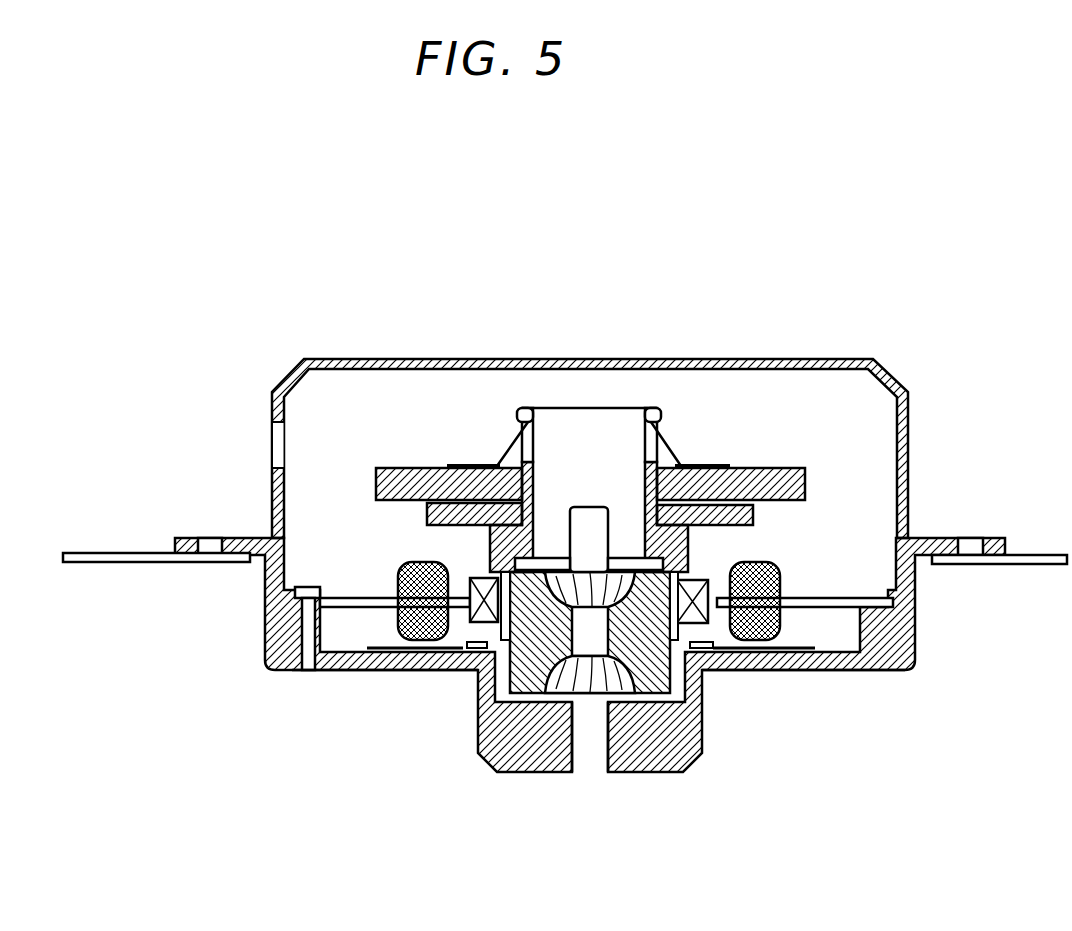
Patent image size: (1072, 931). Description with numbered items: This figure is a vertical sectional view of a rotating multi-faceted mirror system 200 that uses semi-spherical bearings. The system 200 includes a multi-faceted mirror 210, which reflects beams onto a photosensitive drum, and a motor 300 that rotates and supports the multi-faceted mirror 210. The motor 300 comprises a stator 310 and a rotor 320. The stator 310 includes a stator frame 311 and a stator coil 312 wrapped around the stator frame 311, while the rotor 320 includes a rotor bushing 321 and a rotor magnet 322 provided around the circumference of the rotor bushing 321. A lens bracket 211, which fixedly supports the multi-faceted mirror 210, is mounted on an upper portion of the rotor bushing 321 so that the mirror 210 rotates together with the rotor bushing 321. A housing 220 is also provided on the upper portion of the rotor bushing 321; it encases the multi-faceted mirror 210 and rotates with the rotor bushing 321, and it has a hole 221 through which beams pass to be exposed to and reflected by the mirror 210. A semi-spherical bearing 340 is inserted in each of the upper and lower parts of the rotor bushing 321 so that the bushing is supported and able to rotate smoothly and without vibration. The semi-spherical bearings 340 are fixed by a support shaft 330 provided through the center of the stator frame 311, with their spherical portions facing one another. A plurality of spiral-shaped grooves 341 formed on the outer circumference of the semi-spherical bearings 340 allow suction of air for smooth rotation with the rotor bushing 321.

The rotating multi-faceted mirror system 200 is at (834, 306).
The multi-faceted mirror 210 is at (805, 486).
The lens bracket 211 is at (755, 515).
The housing 220 is at (906, 384).
The hole 221 is at (275, 440).
The motor 300 is at (472, 564).
The stator 310 is at (162, 626).
The stator frame 311 is at (266, 604).
The stator coil 312 is at (395, 616).
The rotor 320 is at (380, 775).
The rotor bushing 321 is at (520, 672).
The rotor magnet 322 is at (457, 674).
The support shaft 330 is at (594, 762).
The semi-spherical bearing 340 is at (550, 690).
The grooves 341 is at (615, 676).